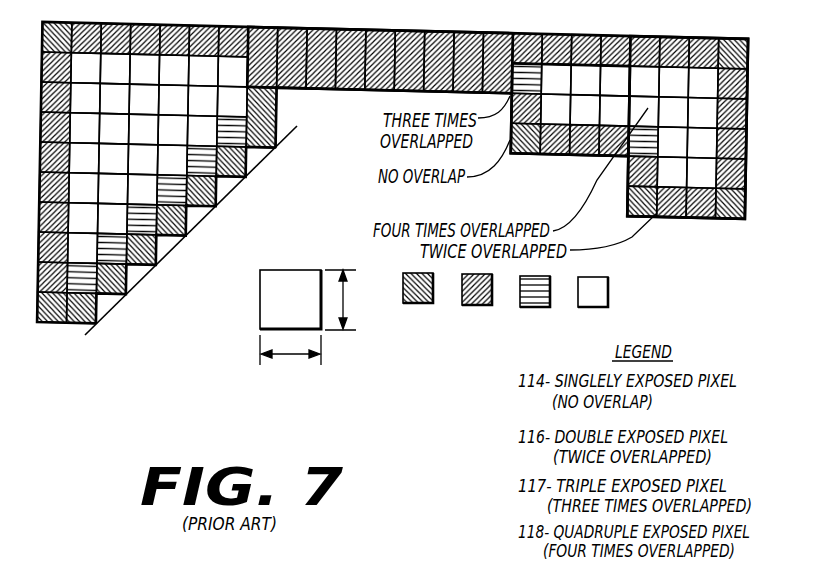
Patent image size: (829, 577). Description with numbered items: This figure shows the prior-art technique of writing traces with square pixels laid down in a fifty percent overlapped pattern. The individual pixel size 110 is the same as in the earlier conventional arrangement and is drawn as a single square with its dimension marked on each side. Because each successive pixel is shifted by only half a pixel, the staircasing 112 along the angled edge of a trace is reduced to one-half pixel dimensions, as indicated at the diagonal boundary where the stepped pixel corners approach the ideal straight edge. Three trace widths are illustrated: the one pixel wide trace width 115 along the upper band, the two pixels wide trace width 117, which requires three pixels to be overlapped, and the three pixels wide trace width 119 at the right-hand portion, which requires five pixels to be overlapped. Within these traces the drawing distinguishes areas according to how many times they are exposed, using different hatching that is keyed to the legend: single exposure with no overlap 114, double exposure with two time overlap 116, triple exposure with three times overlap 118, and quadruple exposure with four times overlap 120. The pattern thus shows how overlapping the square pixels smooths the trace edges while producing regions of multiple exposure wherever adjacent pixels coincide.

The individual pixel size 110 is at (260, 303).
The staircasing 112 is at (190, 236).
The single exposure with no overlap 114 is at (421, 306).
The one pixel wide trace width 115 is at (314, 97).
The double exposure with two time overlap 116 is at (483, 308).
The two pixels wide trace width 117 is at (577, 156).
The triple exposure with three times overlap 118 is at (536, 310).
The three pixels wide trace width 119 is at (726, 220).
The quadruple exposure with four times overlap 120 is at (600, 310).